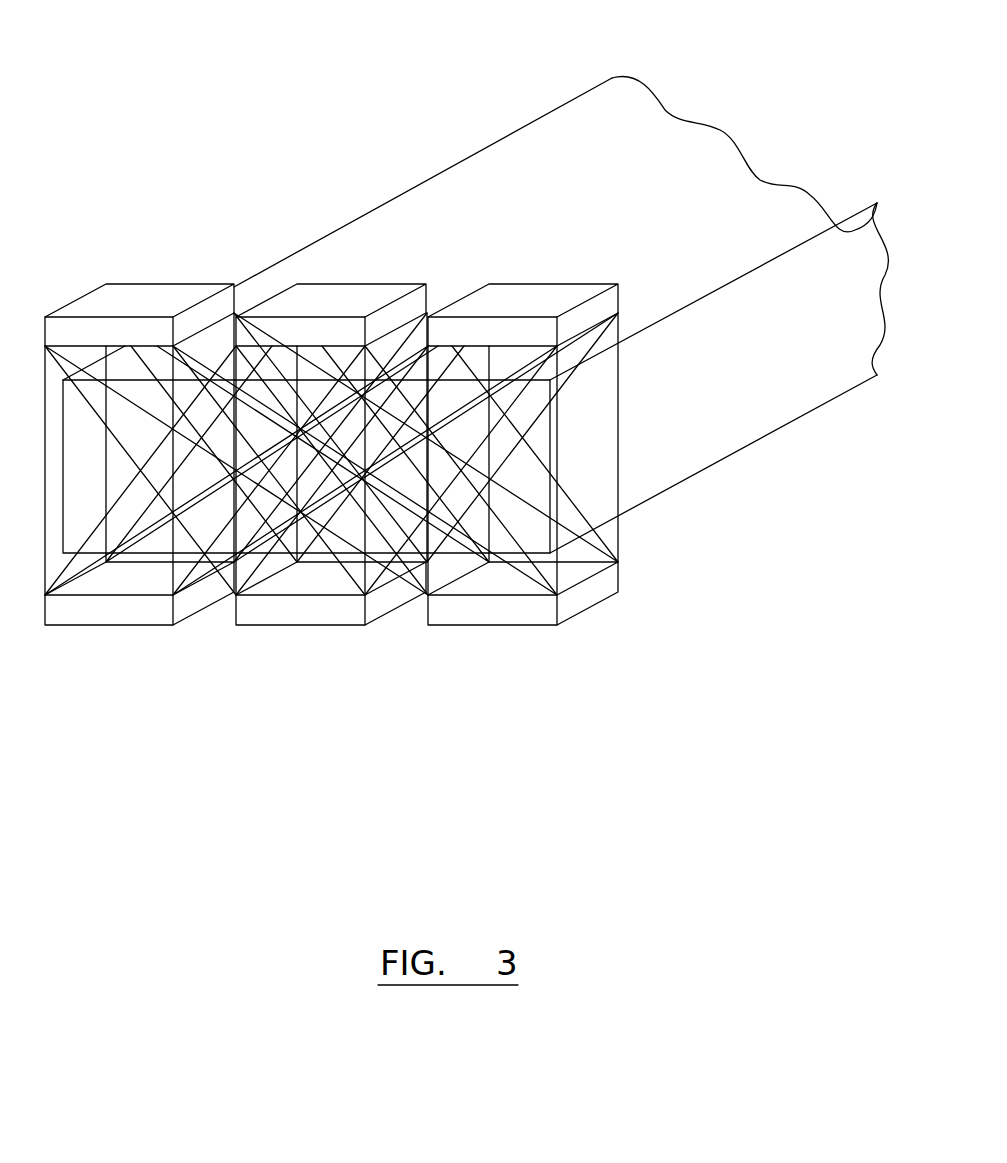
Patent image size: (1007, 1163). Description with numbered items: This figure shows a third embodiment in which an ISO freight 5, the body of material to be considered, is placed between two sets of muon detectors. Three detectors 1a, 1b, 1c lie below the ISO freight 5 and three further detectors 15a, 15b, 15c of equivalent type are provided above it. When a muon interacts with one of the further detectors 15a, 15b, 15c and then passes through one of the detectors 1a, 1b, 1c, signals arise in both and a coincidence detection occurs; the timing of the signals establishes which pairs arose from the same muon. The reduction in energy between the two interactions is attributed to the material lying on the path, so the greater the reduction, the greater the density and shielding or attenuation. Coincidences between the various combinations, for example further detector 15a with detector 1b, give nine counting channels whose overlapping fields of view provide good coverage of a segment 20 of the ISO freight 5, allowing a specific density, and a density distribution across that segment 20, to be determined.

The detector 1a is at (139, 457).
The detector 1b is at (331, 425).
The detector 1c is at (498, 395).
The further detector 15a is at (143, 302).
The further detector 15b is at (332, 302).
The further detector 15c is at (520, 302).
The ISO freight 5 is at (778, 375).
The segment 20 is at (527, 478).